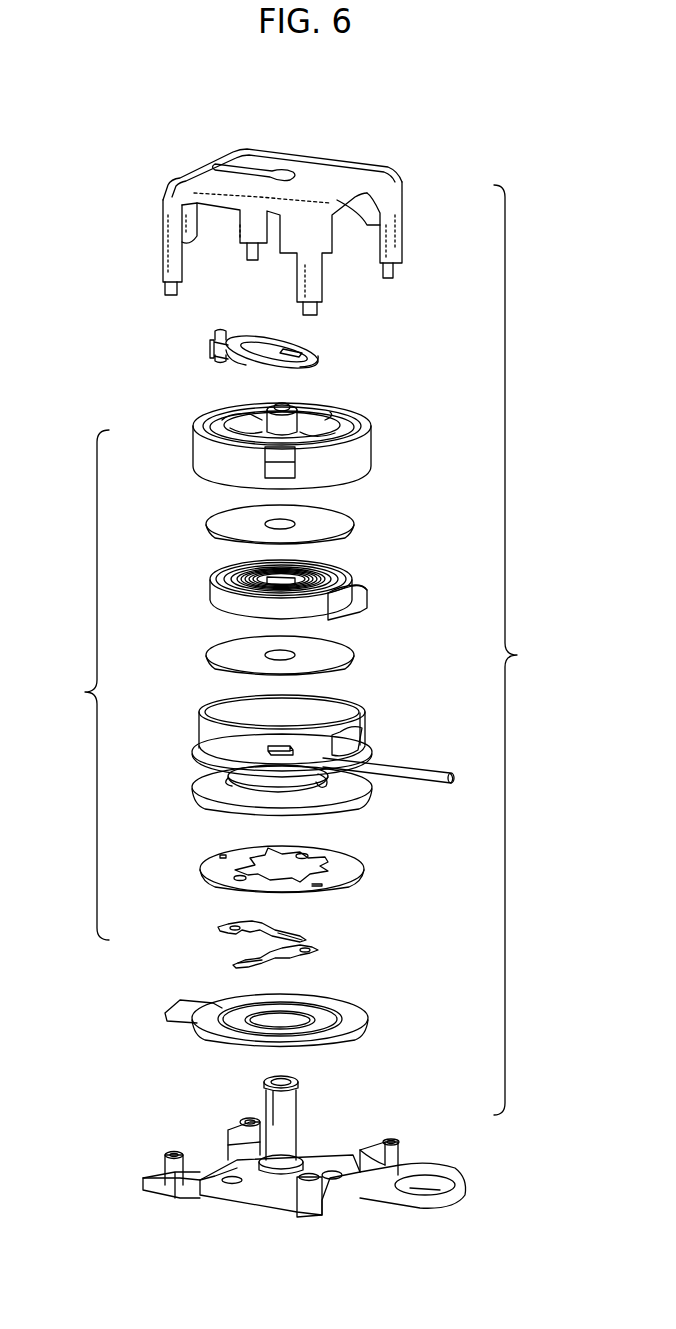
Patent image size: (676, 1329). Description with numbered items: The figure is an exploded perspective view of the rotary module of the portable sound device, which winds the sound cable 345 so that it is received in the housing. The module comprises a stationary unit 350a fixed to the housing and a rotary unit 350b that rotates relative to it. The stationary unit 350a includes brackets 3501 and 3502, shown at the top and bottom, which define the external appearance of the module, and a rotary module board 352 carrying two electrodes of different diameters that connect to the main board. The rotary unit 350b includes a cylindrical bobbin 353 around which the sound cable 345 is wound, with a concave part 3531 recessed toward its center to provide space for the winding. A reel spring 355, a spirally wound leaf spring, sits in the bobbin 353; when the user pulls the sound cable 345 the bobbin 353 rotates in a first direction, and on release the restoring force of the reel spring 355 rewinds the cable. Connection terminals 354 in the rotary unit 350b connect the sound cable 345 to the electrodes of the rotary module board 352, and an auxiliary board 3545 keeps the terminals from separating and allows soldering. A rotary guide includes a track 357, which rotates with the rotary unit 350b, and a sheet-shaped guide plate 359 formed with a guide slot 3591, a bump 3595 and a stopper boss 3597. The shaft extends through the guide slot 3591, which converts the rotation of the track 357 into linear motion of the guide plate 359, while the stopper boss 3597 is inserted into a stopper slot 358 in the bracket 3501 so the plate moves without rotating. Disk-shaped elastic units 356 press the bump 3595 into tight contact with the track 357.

The stopper slot 358 is at (217, 170).
The bracket 3501 is at (395, 210).
The guide plate 359 is at (265, 360).
The guide slot 3591 is at (283, 352).
The stopper boss 3597 is at (212, 337).
The bump 3595 is at (215, 360).
The track 357 is at (212, 446).
The elastic unit 356 is at (220, 525).
The reel spring 355 is at (220, 596).
The bobbin 353 is at (215, 742).
The sound cable 345 is at (412, 770).
The concave part 3531 is at (208, 777).
The auxiliary board 3545 is at (218, 866).
The connection terminals 354 is at (215, 935).
The rotary module board 352 is at (350, 1023).
The bracket 3502 is at (406, 1170).
The stationary unit 350a is at (530, 650).
The rotary unit 350b is at (75, 685).